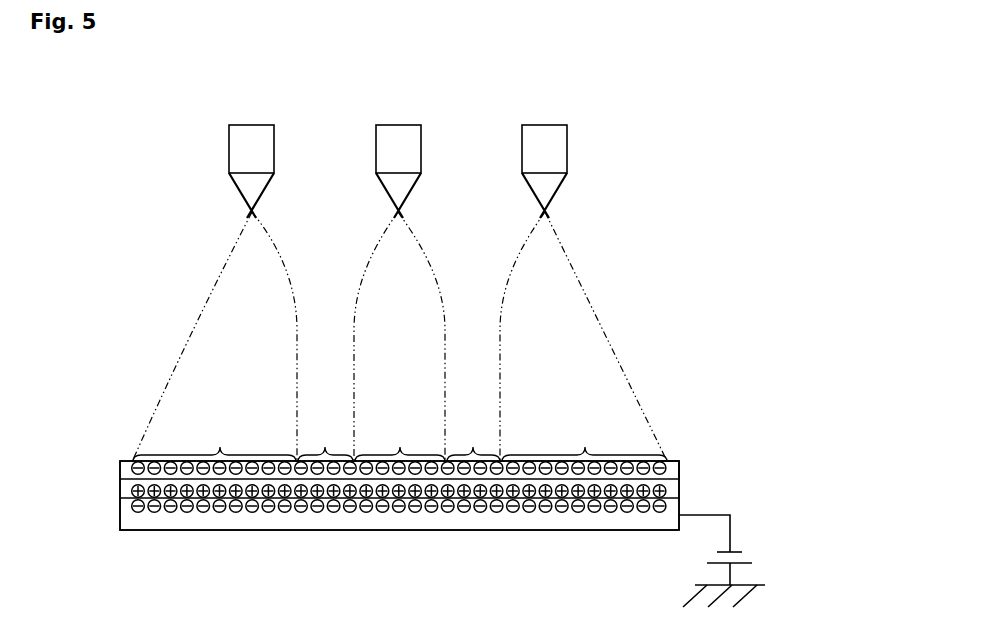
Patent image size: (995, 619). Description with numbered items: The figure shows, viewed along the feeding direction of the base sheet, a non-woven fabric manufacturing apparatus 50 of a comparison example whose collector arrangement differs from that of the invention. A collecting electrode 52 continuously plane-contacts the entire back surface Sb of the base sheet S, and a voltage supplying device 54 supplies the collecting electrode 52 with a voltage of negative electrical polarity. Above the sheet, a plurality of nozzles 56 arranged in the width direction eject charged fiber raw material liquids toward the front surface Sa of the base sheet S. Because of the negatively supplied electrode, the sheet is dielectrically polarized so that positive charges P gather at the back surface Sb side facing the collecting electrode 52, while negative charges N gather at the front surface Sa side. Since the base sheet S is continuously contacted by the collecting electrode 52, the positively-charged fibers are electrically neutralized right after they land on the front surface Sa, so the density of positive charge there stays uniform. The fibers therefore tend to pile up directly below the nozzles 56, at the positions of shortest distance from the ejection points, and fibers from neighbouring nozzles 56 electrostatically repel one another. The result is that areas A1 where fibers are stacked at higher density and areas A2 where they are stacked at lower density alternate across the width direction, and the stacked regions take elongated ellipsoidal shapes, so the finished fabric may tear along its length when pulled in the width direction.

The non-woven fabric manufacturing apparatus 50 is at (629, 139).
The collecting electrode 52 is at (390, 524).
The voltage supplying device 54 is at (745, 561).
The nozzles 56 is at (251, 135).
The base sheet S is at (124, 481).
The front surface Sa is at (132, 464).
The back surface Sb is at (127, 506).
The positive charges P is at (672, 491).
The negative charges N is at (668, 462).
The areas on which fibers are higher densely stacked A1 is at (400, 442).
The areas on which fibers are lower densely stacked A2 is at (399, 442).